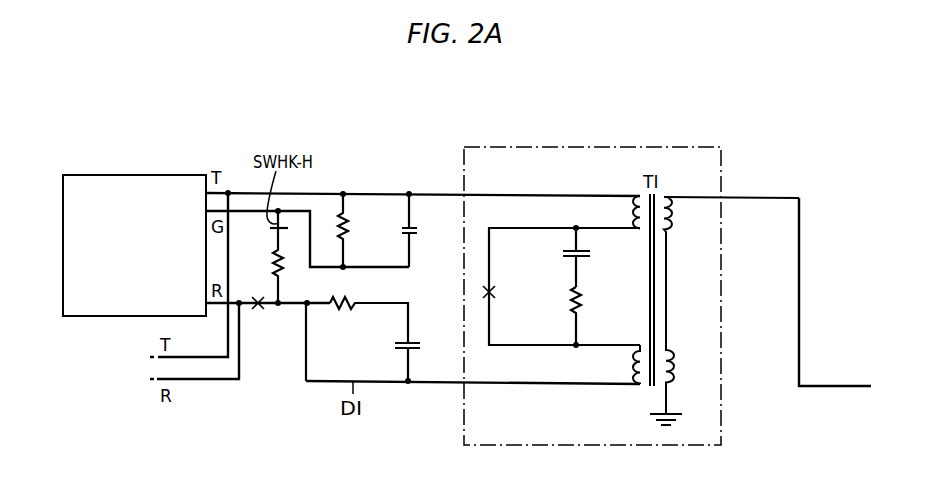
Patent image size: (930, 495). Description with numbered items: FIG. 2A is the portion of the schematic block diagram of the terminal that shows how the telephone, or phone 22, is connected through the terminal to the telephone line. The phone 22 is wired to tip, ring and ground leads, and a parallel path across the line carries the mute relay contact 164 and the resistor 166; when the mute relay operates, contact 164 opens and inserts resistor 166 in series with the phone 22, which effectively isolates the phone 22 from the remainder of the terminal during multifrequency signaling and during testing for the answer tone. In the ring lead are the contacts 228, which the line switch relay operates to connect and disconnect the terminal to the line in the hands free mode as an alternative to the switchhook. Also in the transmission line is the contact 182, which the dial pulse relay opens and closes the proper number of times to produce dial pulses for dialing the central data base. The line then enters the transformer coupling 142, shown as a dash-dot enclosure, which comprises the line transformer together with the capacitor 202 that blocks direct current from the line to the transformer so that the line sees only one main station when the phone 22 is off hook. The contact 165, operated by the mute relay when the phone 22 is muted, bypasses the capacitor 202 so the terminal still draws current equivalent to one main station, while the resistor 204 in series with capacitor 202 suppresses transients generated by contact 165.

The phone 22 is at (123, 188).
The transformer coupling 142 is at (555, 156).
The contacts 228 is at (260, 312).
The resistor 166 is at (358, 230).
The contact 164 is at (417, 230).
The contact 182 is at (353, 380).
The contact 165 is at (502, 293).
The capacitor 202 is at (591, 257).
The resistor 204 is at (593, 316).